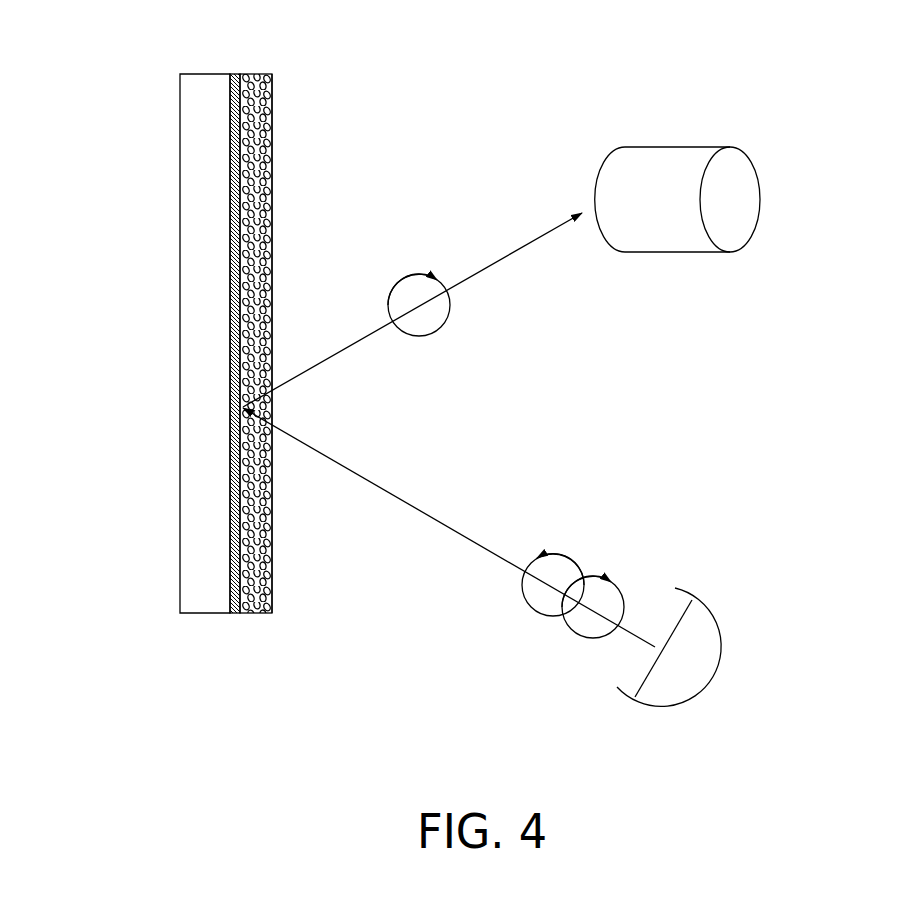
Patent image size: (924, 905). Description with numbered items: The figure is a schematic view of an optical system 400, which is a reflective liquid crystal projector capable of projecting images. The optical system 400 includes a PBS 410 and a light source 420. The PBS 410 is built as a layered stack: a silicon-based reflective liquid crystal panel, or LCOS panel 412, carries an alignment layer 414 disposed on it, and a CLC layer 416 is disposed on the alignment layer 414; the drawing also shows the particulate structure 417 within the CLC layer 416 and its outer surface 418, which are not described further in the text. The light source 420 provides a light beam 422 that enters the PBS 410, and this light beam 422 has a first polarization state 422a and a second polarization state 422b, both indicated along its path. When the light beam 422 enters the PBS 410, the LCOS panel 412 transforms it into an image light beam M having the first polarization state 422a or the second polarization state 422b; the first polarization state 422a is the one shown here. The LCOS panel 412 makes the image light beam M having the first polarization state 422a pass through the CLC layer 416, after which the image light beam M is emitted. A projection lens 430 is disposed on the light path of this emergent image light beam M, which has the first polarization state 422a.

The optical system 400 is at (882, 817).
The PBS 410 is at (220, 434).
The silicon-based reflective liquid crystal panel 412 is at (197, 613).
The alignment layer 414 is at (233, 613).
The CLC layer 416 is at (282, 404).
The particles 417 is at (247, 608).
The surface of layer 418 is at (272, 613).
The light source 420 is at (708, 648).
The light beam 422 is at (385, 493).
The first polarization state 422a is at (397, 280).
The second polarization state 422b is at (525, 565).
The projection lens 430 is at (677, 158).
The image light beam M is at (325, 362).